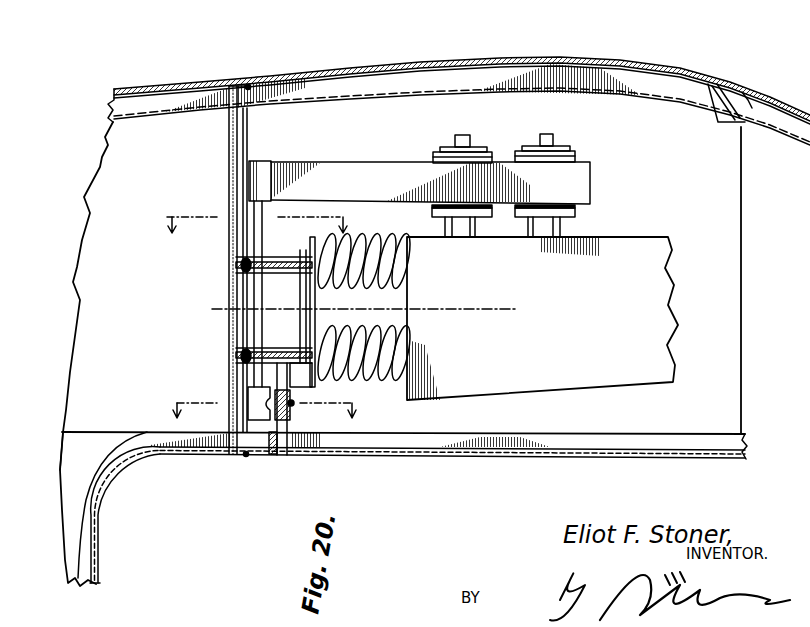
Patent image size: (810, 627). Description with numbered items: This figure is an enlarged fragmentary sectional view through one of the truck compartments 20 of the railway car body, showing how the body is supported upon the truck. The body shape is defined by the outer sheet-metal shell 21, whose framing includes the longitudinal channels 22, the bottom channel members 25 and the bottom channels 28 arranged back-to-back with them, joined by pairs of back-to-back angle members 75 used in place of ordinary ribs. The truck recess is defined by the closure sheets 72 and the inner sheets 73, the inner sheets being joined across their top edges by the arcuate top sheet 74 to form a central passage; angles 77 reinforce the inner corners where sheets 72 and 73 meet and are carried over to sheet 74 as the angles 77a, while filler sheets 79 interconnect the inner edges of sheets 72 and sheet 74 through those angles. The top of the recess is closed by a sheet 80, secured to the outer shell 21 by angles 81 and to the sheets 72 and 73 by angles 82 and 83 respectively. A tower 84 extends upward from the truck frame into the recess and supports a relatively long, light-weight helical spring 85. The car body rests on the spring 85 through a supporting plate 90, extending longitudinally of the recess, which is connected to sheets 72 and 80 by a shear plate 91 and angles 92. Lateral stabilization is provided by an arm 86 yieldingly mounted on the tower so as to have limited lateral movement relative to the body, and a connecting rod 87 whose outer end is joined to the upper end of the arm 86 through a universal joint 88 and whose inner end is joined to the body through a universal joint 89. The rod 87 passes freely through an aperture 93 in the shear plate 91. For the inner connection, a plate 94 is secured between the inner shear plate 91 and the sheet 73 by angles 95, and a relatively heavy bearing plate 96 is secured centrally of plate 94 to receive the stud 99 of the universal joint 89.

The truck compartment 20 is at (570, 113).
The outer sheet-metal shell 21 is at (182, 82).
The channels 22 is at (257, 404).
The channel members 25 is at (748, 96).
The bottom channels 28 is at (712, 84).
The closure sheets 72 is at (90, 274).
The inner sheets 73 is at (178, 455).
The top sheet 74 is at (99, 572).
The angle members 75 is at (352, 97).
The angles 77 is at (412, 438).
The angles 77a is at (85, 470).
The filler sheets 79 is at (68, 512).
The sheets 80 is at (229, 166).
The angles 81 is at (248, 85).
The angles 82 is at (243, 135).
The angles 83 is at (246, 457).
The towers 84 is at (445, 318).
The helical springs 85 is at (400, 262).
The arms 86 is at (389, 162).
The connecting rods 87 is at (258, 296).
The universal joints 88 is at (256, 165).
The universal joints 89 is at (256, 400).
The supporting plates 90 is at (310, 302).
The shear plates 91 is at (236, 260).
The angles 92 is at (300, 256).
The apertures 93 is at (243, 262).
The plates 94 is at (290, 420).
The angles 95 is at (272, 456).
The bearing plates 96 is at (296, 428).
The studs 99 is at (294, 404).